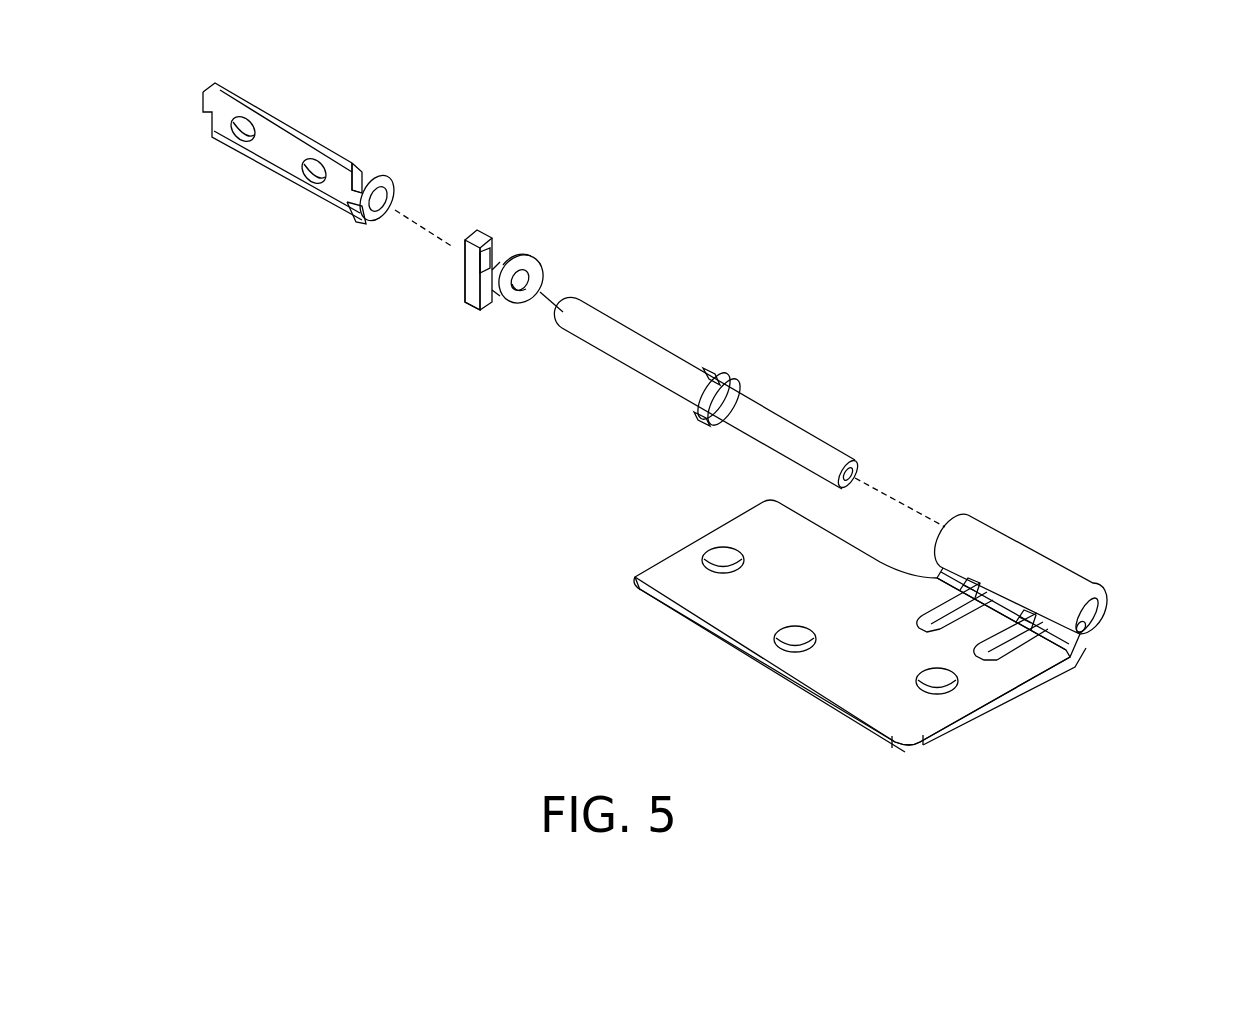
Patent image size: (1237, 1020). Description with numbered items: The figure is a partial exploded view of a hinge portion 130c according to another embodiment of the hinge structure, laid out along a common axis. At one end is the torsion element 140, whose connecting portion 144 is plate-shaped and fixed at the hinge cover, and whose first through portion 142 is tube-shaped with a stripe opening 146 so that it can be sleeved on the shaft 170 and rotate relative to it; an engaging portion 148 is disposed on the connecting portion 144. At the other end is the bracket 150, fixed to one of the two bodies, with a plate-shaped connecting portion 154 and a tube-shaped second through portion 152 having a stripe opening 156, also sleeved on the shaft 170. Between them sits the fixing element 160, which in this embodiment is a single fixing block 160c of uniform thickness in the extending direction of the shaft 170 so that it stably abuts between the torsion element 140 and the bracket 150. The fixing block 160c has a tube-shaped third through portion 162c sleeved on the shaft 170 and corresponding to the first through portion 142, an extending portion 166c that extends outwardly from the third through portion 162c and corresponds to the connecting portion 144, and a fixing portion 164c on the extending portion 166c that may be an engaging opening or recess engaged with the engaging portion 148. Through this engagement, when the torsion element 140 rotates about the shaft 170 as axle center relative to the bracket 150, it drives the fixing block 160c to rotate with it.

The hinge portion 130c is at (768, 158).
The torsion element 140 is at (322, 110).
The first through portion 142 is at (363, 165).
The connecting portion 144 is at (272, 152).
The stripe opening 146 is at (380, 190).
The engaging portion 148 is at (348, 185).
The fixing block 160c is at (545, 230).
The fixing element 160 is at (490, 255).
The third through portion 162c is at (519, 293).
The fixing portion 164c is at (475, 255).
The extending portion 166c is at (478, 302).
The shaft 170 is at (790, 435).
The bracket 150 is at (1050, 513).
The second through portion 152 is at (1062, 584).
The connecting portion 154 is at (985, 682).
The stripe opening 156 is at (1080, 633).